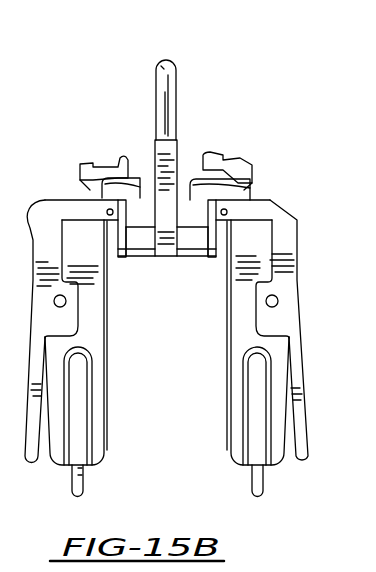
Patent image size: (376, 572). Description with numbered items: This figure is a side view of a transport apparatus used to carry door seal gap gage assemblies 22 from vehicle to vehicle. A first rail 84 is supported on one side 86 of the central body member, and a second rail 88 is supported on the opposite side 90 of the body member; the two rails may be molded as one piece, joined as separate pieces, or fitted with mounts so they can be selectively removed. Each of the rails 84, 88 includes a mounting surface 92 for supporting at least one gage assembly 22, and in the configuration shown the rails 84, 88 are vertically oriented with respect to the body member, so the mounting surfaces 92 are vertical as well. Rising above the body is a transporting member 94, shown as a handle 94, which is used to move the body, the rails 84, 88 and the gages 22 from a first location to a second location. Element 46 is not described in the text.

The gage assembly 22 is at (40, 200).
The latch clip 46 is at (80, 190).
The first rail 84 is at (121, 258).
The one side of the body member 86 is at (148, 153).
The second rail 88 is at (217, 258).
The opposite side of the body member 90 is at (178, 164).
The mounting surface 92 is at (200, 258).
The transporting member 94 is at (178, 62).